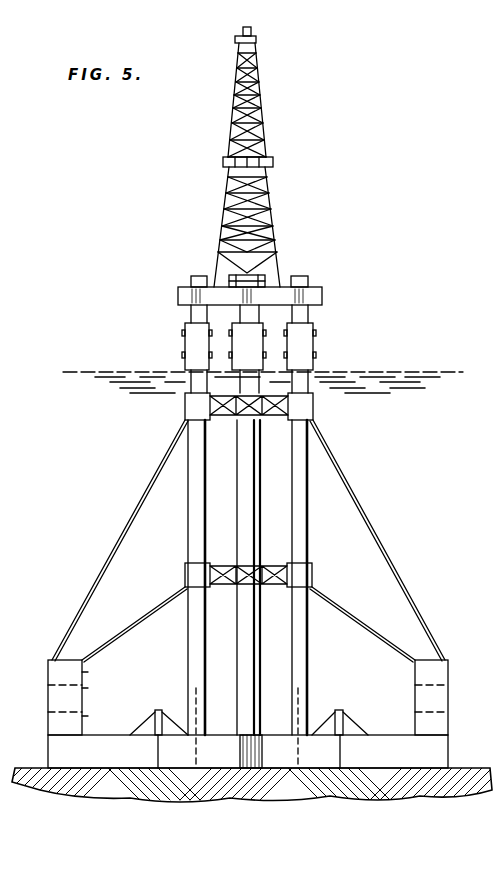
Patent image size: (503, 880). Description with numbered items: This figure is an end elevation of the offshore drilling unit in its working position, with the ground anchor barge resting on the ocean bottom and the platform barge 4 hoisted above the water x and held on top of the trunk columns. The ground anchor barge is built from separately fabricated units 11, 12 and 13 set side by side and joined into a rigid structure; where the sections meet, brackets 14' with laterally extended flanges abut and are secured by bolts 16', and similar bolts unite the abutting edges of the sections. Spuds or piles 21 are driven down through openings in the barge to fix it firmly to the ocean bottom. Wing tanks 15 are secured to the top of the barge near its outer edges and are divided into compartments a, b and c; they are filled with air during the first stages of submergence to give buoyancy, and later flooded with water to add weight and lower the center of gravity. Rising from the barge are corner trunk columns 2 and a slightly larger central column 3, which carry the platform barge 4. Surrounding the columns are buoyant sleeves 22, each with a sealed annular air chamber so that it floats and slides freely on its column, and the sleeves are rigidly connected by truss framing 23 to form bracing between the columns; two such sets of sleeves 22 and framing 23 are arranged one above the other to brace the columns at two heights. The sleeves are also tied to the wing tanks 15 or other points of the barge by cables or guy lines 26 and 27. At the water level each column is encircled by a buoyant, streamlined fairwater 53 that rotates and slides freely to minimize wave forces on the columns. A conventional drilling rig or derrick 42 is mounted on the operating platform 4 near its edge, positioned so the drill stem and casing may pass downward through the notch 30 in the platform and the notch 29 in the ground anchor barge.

The drilling rig or derrick 42 is at (262, 141).
The notch 30 is at (247, 308).
The platform barge 4 is at (178, 296).
The fairwater 53 is at (245, 342).
The water x is at (398, 372).
The truss framing 23 is at (185, 412).
The sleeve 22 is at (313, 413).
The trunk column 2 is at (196, 481).
The central column 3 is at (262, 500).
The cable or guy line 26 is at (136, 500).
The cable or guy line 27 is at (132, 626).
The wing tank 15 is at (70, 660).
The compartment a is at (88, 672).
The compartment b is at (88, 688).
The compartment c is at (88, 716).
The separately fabricated unit 11 is at (222, 737).
The notch 29 is at (243, 756).
The separately fabricated unit 12 is at (104, 742).
The separately fabricated unit 13 is at (392, 748).
The bolt 16' is at (159, 707).
The bracket 14' is at (351, 717).
The spud or pile 21 is at (204, 706).